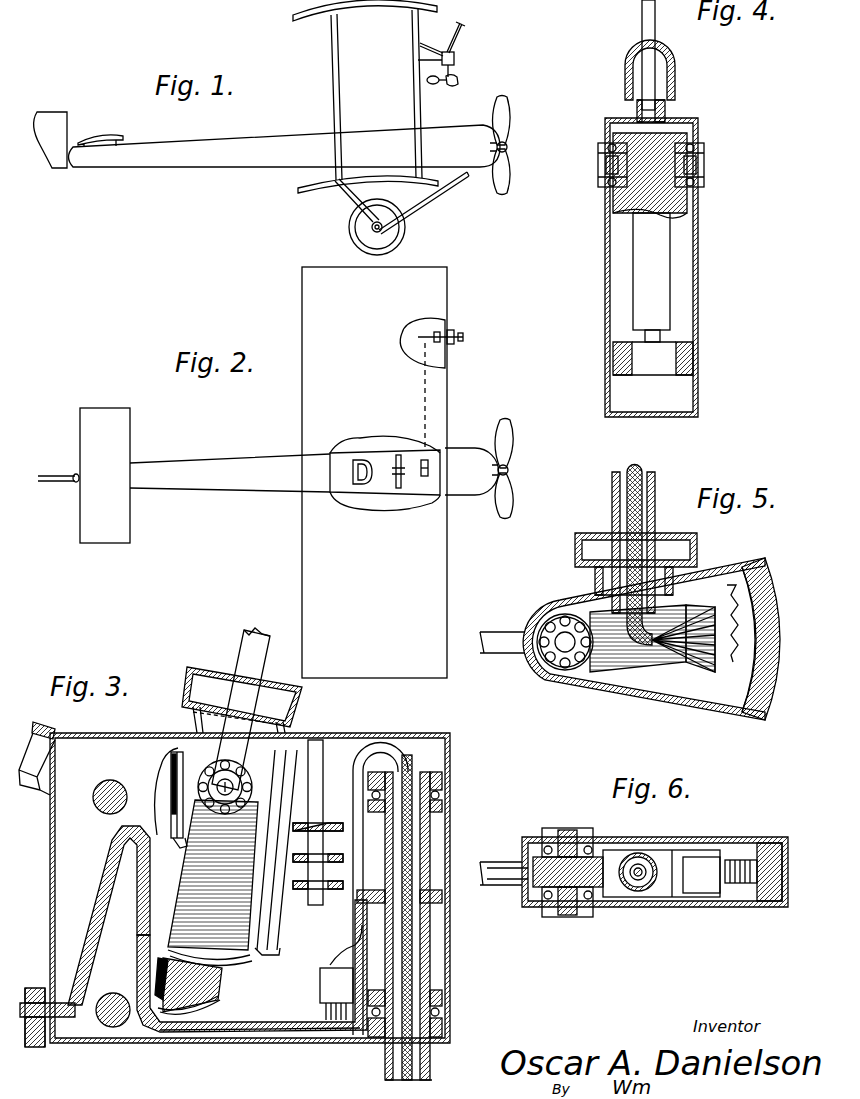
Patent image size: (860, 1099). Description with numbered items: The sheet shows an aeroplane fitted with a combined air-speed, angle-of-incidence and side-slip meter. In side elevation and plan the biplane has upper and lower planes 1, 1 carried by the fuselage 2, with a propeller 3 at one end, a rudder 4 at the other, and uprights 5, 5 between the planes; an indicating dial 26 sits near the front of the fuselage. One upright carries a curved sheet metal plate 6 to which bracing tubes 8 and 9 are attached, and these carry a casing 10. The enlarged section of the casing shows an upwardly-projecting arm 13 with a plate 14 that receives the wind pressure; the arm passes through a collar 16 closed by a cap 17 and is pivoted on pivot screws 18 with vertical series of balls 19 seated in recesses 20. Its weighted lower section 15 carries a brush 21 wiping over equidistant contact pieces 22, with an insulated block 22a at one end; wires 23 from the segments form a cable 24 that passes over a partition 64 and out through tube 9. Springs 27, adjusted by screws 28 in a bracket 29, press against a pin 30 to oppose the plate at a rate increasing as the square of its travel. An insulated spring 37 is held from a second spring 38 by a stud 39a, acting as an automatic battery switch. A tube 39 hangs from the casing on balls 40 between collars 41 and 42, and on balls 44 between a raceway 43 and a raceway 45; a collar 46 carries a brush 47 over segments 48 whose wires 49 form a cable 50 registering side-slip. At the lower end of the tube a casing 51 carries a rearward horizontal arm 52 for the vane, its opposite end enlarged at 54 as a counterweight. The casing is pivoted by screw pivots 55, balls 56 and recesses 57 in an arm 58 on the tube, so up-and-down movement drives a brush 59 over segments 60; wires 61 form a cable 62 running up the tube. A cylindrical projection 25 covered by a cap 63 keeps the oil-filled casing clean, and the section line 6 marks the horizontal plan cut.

In FIG. 1, the planes 1 is at (381, 8).
In FIG. 2, the planes 1 is at (374, 472).
In FIG. 1, the fuselage 2 is at (231, 145).
In FIG. 2, the fuselage 2 is at (219, 466).
In FIG. 1, the propeller 3 is at (507, 111).
In FIG. 2, the propeller 3 is at (508, 446).
In FIG. 1, the rudder 4 is at (68, 128).
In FIG. 2, the rudder 4 is at (57, 480).
In FIG. 3, the rudder 4 is at (261, 632).
In FIG. 1, the uprights 5 is at (367, 94).
In FIG. 2, the uprights 5 is at (418, 340).
In FIG. 5, the sheet metal plate 6 is at (495, 643).
In FIG. 1, the bracing tube 8 is at (424, 46).
In FIG. 3, the bracing tube 8 is at (53, 727).
In FIG. 1, the bracing tube 9 is at (428, 67).
In FIG. 3, the bracing tube 9 is at (42, 1000).
In FIG. 1, the casing 10 is at (455, 60).
In FIG. 3, the casing 10 is at (367, 733).
In FIG. 4, the casing 10 is at (693, 203).
In FIG. 1, the arm 13 is at (455, 48).
In FIG. 3, the arm 13 is at (255, 672).
In FIG. 4, the arm 13 is at (651, 44).
In FIG. 1, the plate 14 is at (462, 25).
In FIG. 2, the plate 14 is at (466, 337).
In FIG. 3, the lower section 15 is at (183, 873).
In FIG. 4, the lower section 15 is at (660, 255).
In FIG. 3, the collar 16 is at (186, 719).
In FIG. 4, the collar 16 is at (667, 108).
In FIG. 3, the cap 17 is at (291, 723).
In FIG. 4, the cap 17 is at (676, 81).
In FIG. 3, the pivot screws 18 is at (213, 768).
In FIG. 4, the pivot screws 18 is at (698, 144).
In FIG. 3, the balls 19 is at (244, 786).
In FIG. 4, the balls 19 is at (697, 178).
In FIG. 4, the recesses 20 is at (623, 200).
In FIG. 3, the brush 21 is at (233, 961).
In FIG. 4, the brush 21 is at (660, 337).
In FIG. 3, the contact pieces 22 is at (214, 983).
In FIG. 4, the contact pieces 22 is at (663, 373).
In FIG. 3, the insulated block 22a is at (157, 974).
In FIG. 3, the wires 23 is at (218, 1007).
In FIG. 3, the cable 24 is at (98, 895).
In FIG. 5, the cylindrical projection 25 is at (594, 579).
In FIG. 2, the indicating dial 26 is at (417, 485).
In FIG. 3, the springs 27 is at (268, 878).
In FIG. 3, the adjusting screws 28 is at (333, 823).
In FIG. 3, the bracket 29 is at (328, 760).
In FIG. 3, the pin 30 is at (264, 937).
In FIG. 3, the insulated spring 37 is at (172, 808).
In FIG. 3, the insulated spring 38 is at (172, 785).
In FIG. 3, the tube 39 is at (431, 1062).
In FIG. 5, the tube 39 is at (653, 504).
In FIG. 6, the tube 39 is at (657, 855).
In FIG. 3, the stud 39a is at (180, 847).
In FIG. 3, the balls 40 is at (440, 794).
In FIG. 3, the collar 41 is at (443, 777).
In FIG. 3, the collar 42 is at (443, 817).
In FIG. 3, the raceway 43 is at (444, 1030).
In FIG. 3, the balls 44 is at (450, 1010).
In FIG. 3, the raceway 45 is at (424, 987).
In FIG. 3, the collar 46 is at (441, 909).
In FIG. 3, the brush 47 is at (352, 960).
In FIG. 3, the contact pieces 48 is at (320, 980).
In FIG. 3, the wires 49 is at (325, 1010).
In FIG. 3, the cable 50 is at (280, 1012).
In FIG. 5, the casing 51 is at (730, 565).
In FIG. 6, the casing 51 is at (727, 837).
In FIG. 5, the horizontal arm 52 is at (522, 631).
In FIG. 6, the horizontal arm 52 is at (503, 868).
In FIG. 5, the enlarged end 54 is at (767, 571).
In FIG. 6, the enlarged end 54 is at (780, 894).
In FIG. 5, the screw pivots 55 is at (561, 647).
In FIG. 6, the screw pivots 55 is at (588, 837).
In FIG. 5, the balls 56 is at (540, 652).
In FIG. 6, the recesses 57 is at (542, 837).
In FIG. 5, the arm 58 is at (641, 666).
In FIG. 6, the arm 58 is at (620, 855).
In FIG. 5, the brush 59 is at (727, 645).
In FIG. 6, the brush 59 is at (740, 884).
In FIG. 5, the segments 60 is at (697, 613).
In FIG. 6, the segments 60 is at (707, 890).
In FIG. 5, the wires 61 is at (667, 655).
In FIG. 5, the cable 62 is at (634, 480).
In FIG. 6, the cable 62 is at (638, 877).
In FIG. 5, the cap 63 is at (696, 543).
In FIG. 3, the partition 64 is at (115, 919).